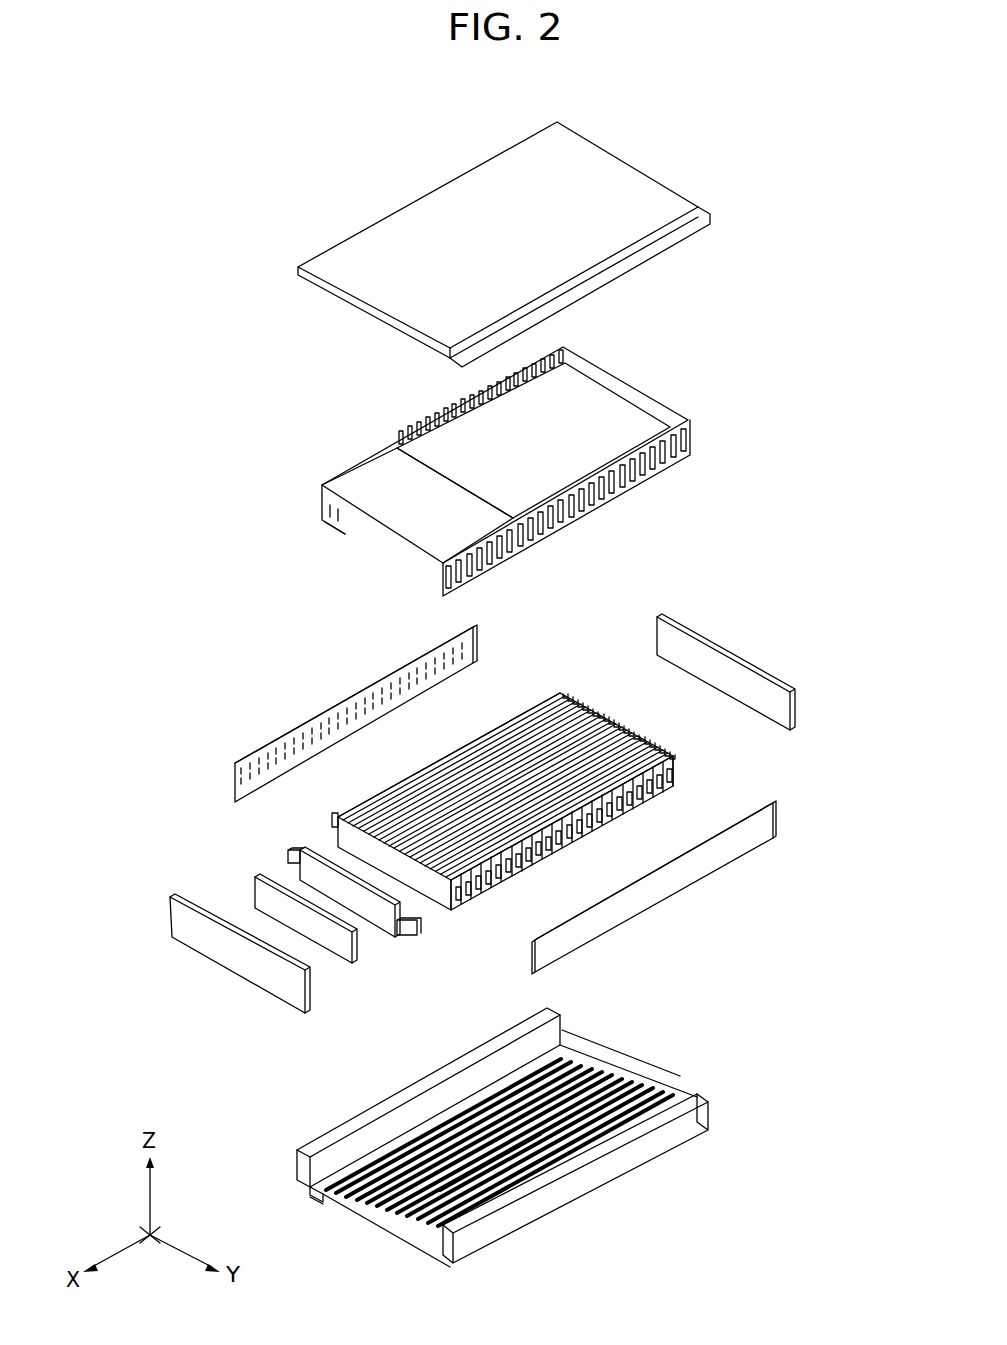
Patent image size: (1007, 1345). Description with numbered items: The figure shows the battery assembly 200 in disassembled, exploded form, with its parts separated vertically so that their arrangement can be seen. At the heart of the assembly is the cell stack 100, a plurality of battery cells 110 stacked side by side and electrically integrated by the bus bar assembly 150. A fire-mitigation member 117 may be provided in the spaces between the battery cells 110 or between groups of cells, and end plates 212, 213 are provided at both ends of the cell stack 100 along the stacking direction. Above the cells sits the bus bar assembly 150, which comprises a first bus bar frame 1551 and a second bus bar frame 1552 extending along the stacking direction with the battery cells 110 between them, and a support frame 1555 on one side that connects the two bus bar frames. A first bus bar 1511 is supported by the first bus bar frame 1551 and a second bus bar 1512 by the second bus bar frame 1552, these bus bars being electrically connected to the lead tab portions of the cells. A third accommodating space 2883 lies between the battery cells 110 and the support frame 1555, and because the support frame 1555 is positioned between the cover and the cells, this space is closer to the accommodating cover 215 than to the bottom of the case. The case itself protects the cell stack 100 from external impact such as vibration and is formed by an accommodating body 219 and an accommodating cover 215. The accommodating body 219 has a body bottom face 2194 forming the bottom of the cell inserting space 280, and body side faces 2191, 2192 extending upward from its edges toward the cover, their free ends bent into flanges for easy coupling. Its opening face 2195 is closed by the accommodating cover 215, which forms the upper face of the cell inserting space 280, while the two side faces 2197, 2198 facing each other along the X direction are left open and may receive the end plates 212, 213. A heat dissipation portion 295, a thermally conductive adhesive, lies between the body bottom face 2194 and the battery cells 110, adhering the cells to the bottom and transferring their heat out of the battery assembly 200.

The battery assembly 200 is at (215, 139).
The accommodating cover 215 is at (640, 185).
The bus bar assembly 150 is at (497, 469).
The first bus bar frame 1551 is at (428, 426).
The support frame 1555 is at (362, 468).
The third accommodating space 2883 is at (365, 530).
The second bus bar frame 1552 is at (605, 503).
The cell stack 100 is at (597, 710).
The end plate 213 is at (740, 662).
The first bus bar 1511 is at (345, 700).
The second bus bar 1512 is at (712, 863).
The battery cell 110 is at (308, 847).
The fire-mitigation member 117 is at (258, 877).
The end plate 212 is at (218, 960).
The accommodating body 219 is at (524, 1137).
The opening face 2195 is at (423, 1110).
The heat dissipation portion 295 is at (600, 1077).
The side face 2198 is at (627, 1063).
The body side face 2191 is at (308, 1178).
The body side face 2192 is at (617, 1168).
The side face 2197 is at (340, 1192).
The cell inserting space 280 is at (513, 1133).
The body bottom face 2194 is at (510, 1141).